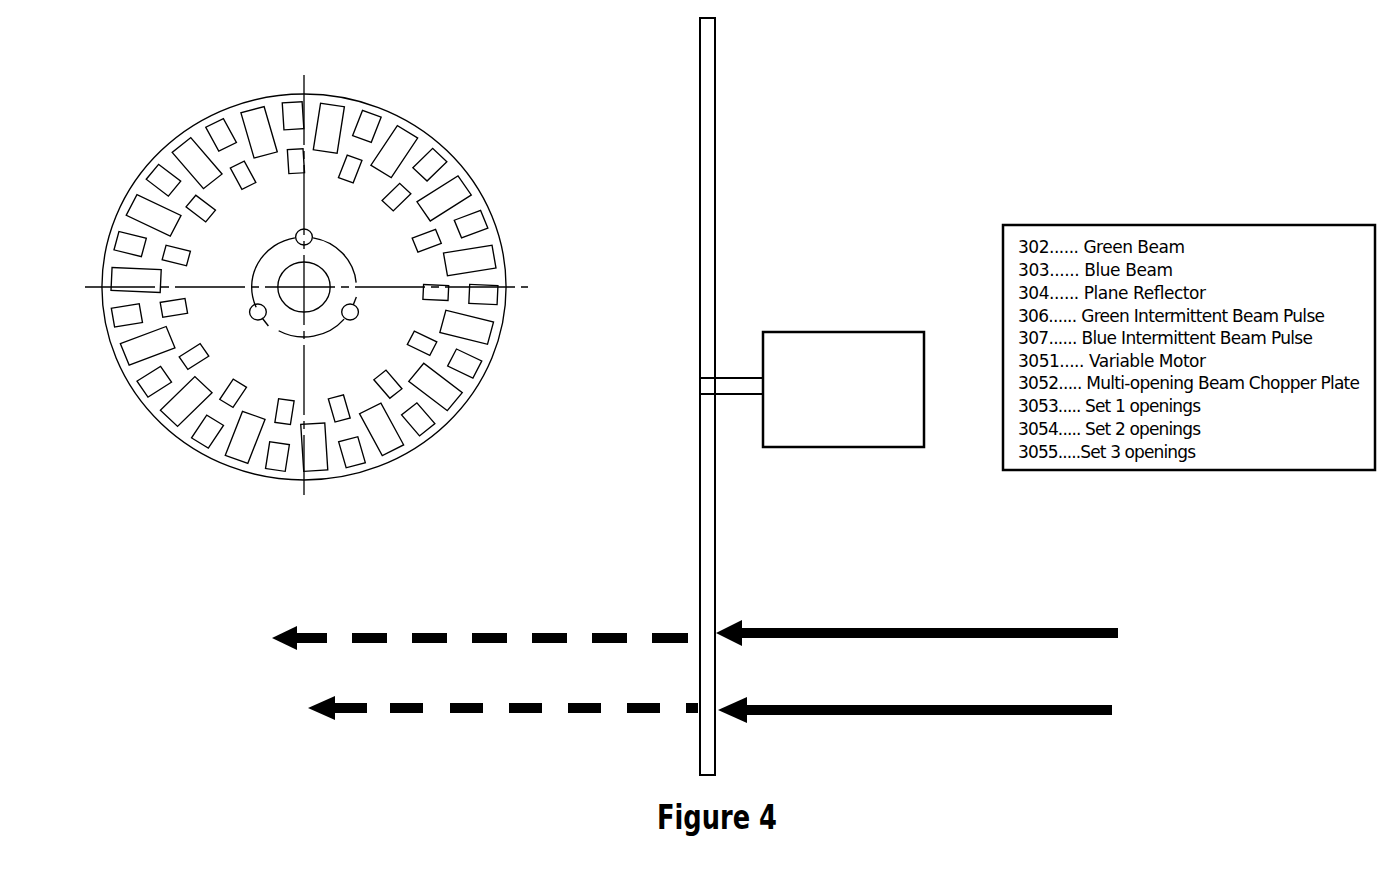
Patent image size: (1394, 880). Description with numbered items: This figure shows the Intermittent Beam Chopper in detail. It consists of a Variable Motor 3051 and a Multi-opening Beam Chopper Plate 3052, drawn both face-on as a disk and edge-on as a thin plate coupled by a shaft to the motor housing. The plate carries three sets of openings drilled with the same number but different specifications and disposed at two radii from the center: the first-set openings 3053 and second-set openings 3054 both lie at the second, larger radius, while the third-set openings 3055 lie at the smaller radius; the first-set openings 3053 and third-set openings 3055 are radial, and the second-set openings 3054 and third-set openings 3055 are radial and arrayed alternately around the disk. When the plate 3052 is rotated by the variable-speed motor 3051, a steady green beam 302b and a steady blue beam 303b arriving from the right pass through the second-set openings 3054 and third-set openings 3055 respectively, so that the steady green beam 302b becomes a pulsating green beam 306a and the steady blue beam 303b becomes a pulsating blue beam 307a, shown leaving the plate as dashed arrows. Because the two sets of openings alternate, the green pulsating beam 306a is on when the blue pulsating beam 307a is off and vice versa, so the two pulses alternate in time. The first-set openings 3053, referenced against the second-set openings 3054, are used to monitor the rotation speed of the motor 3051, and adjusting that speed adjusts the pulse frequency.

The steady green beam 302b is at (887, 628).
The steady blue beam 303b is at (987, 716).
The pulsating green beam 306a is at (426, 636).
The pulsating blue beam 307a is at (520, 714).
The variable motor 3051 is at (787, 332).
The multi-opening beam chopper plate 3052 is at (715, 158).
The Set 1 openings 3053 is at (462, 190).
The Set 2 openings 3054 is at (445, 388).
The Set 3 openings 3055 is at (437, 240).